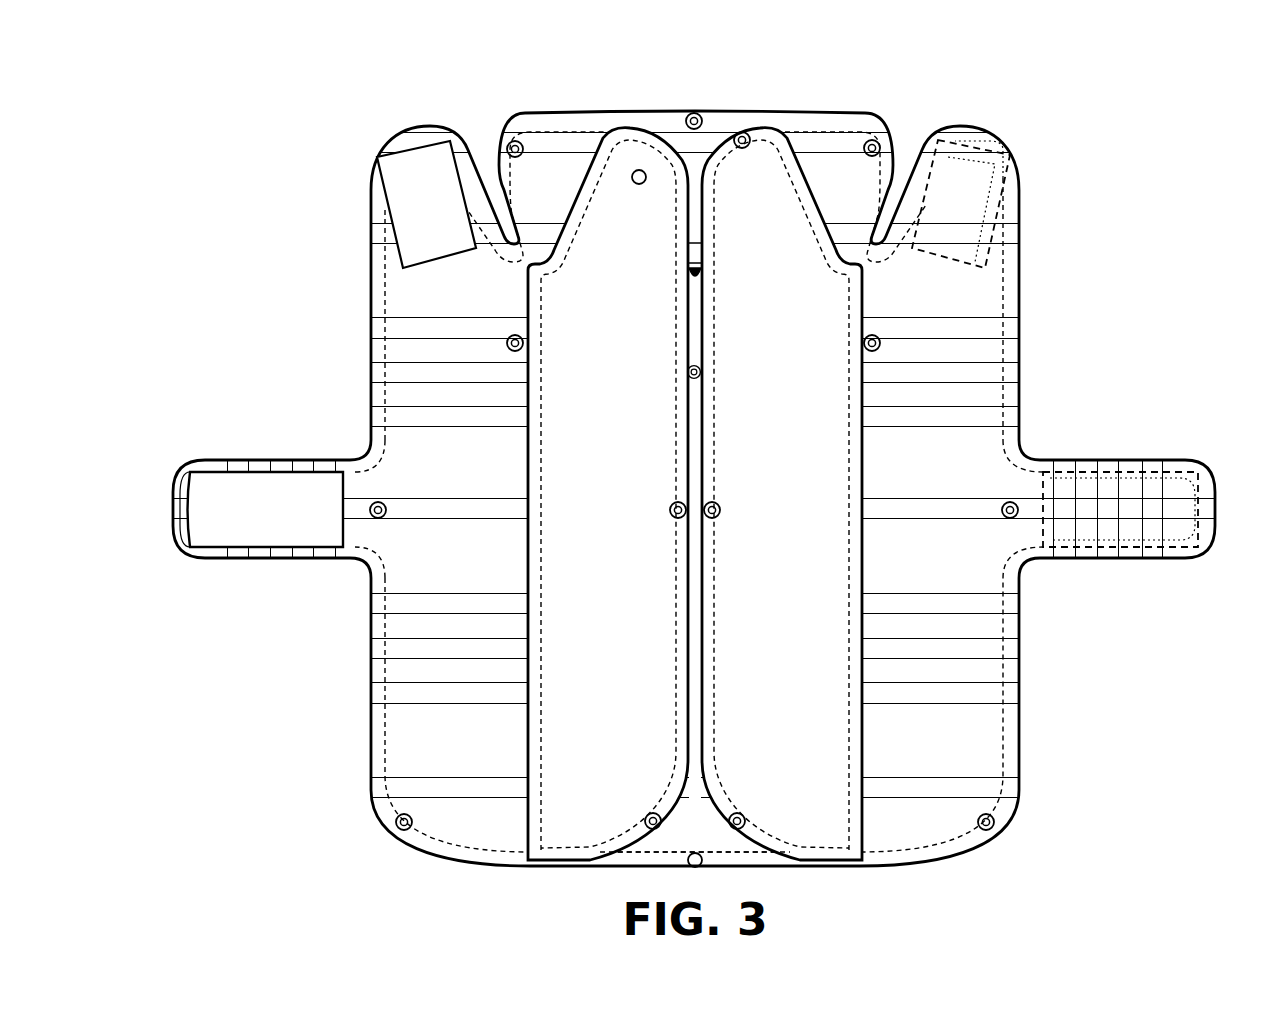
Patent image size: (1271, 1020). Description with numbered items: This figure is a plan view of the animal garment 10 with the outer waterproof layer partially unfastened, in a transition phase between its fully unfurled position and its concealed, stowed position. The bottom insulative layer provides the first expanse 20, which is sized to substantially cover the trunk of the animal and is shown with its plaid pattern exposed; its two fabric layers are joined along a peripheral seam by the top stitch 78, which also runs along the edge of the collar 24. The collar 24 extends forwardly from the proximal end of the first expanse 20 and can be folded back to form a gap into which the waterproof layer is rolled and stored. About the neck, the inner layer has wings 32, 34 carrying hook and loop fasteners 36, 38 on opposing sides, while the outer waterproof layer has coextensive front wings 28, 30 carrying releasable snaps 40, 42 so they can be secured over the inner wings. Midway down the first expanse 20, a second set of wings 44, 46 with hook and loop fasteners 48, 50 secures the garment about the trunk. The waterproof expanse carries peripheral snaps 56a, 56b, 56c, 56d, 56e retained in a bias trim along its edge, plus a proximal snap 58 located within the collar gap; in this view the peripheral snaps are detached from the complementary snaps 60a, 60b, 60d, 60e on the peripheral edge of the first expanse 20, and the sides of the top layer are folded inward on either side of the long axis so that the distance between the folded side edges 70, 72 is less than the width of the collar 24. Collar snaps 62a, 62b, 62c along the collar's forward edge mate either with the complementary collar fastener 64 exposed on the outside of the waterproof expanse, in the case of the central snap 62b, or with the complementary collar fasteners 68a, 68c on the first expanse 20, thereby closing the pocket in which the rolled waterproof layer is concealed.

The garment 10 is at (455, 88).
The first expanse 20 is at (909, 466).
The collar 24 is at (752, 106).
The front wing 28 is at (805, 170).
The front wing 30 is at (586, 166).
The wing 32 is at (993, 129).
The wing 34 is at (400, 129).
The hook and loop fastener 36 is at (1012, 178).
The hook and loop fastener 38 is at (414, 207).
The releasable snap 40 is at (742, 149).
The releasable snap 42 is at (639, 186).
The wing 44 is at (1110, 460).
The wing 46 is at (284, 460).
The hook and loop fastener 48 is at (1205, 508).
The hook and loop fastener 50 is at (252, 514).
The peripheral snap 56a is at (669, 510).
The peripheral snap 56b is at (650, 812).
The peripheral snap 56c is at (695, 852).
The peripheral snap 56d is at (739, 812).
The peripheral snap 56e is at (721, 510).
The proximal snap 58 is at (703, 281).
The complementary snap 60a is at (372, 502).
The complementary snap 60b is at (397, 824).
The complementary snap 60d is at (993, 824).
The complementary snap 60e is at (1016, 502).
The collar snap 62a is at (515, 140).
The collar snap 62b is at (694, 112).
The collar snap 62c is at (873, 139).
The complementary collar fastener 64 is at (703, 378).
The complementary collar fastener 68a is at (524, 343).
The complementary collar fastener 68c is at (863, 343).
The folded side edge 70 is at (864, 556).
The folded side edge 72 is at (526, 556).
The top stitch 78 is at (1005, 298).